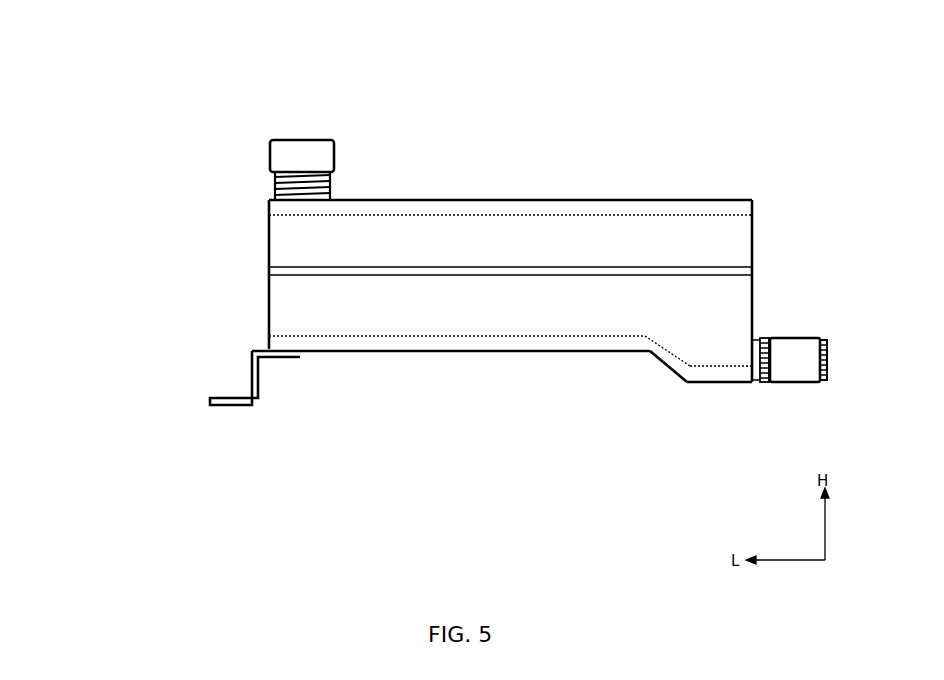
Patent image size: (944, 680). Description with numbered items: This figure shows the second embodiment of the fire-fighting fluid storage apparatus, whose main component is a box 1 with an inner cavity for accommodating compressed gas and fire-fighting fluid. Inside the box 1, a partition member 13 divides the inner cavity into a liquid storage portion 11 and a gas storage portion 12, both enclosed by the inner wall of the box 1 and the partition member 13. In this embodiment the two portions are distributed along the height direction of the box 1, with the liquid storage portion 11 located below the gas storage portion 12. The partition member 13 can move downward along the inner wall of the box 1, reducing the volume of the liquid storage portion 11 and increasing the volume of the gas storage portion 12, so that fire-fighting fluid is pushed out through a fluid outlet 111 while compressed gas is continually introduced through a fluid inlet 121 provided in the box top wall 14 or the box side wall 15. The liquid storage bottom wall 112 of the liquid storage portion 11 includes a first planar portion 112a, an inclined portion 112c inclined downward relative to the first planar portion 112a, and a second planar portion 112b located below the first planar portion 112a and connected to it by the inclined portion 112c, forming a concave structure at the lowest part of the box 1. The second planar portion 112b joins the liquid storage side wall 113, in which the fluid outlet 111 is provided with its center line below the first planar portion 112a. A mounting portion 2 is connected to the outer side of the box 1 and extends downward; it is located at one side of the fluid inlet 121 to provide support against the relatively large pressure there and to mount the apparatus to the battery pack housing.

The box 1 is at (120, 72).
The mounting portion 2 is at (227, 405).
The liquid storage portion 11 is at (280, 300).
The gas storage portion 12 is at (590, 227).
The partition member 13 is at (745, 270).
The box top wall 14 is at (487, 207).
The box side wall 15 is at (269, 237).
The fluid outlet 111 is at (806, 380).
The liquid storage bottom wall 112 is at (563, 464).
The first planar portion 112a is at (435, 338).
The second planar portion 112b is at (725, 383).
The inclined portion 112c is at (660, 355).
The liquid storage side wall 113 is at (752, 297).
The fluid inlet 121 is at (295, 150).